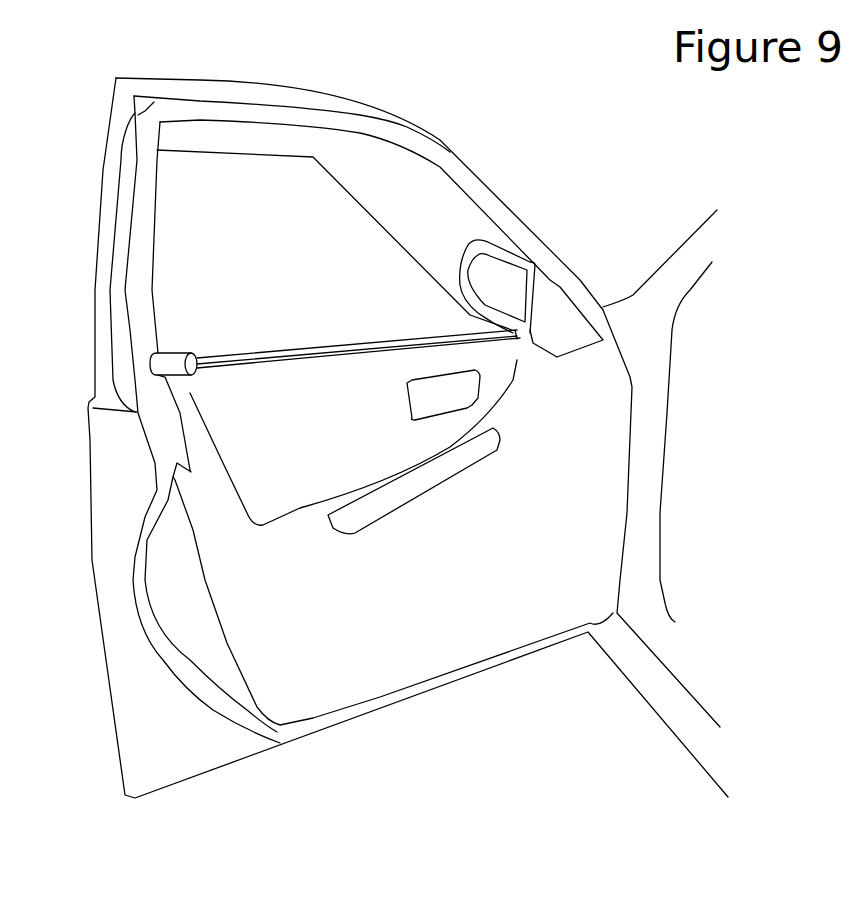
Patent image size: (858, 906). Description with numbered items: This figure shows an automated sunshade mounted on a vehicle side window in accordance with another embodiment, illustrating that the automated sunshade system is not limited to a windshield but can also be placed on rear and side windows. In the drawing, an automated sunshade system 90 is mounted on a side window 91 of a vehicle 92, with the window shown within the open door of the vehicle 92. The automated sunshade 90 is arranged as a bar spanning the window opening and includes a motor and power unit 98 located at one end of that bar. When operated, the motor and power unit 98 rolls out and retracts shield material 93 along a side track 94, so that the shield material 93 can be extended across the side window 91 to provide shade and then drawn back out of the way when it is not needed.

The automated sunshade system 90 is at (348, 350).
The side window 91 is at (430, 198).
The vehicle 92 is at (657, 257).
The shield material 93 is at (233, 157).
The side track 94 is at (152, 210).
The motor and power unit 98 is at (177, 347).